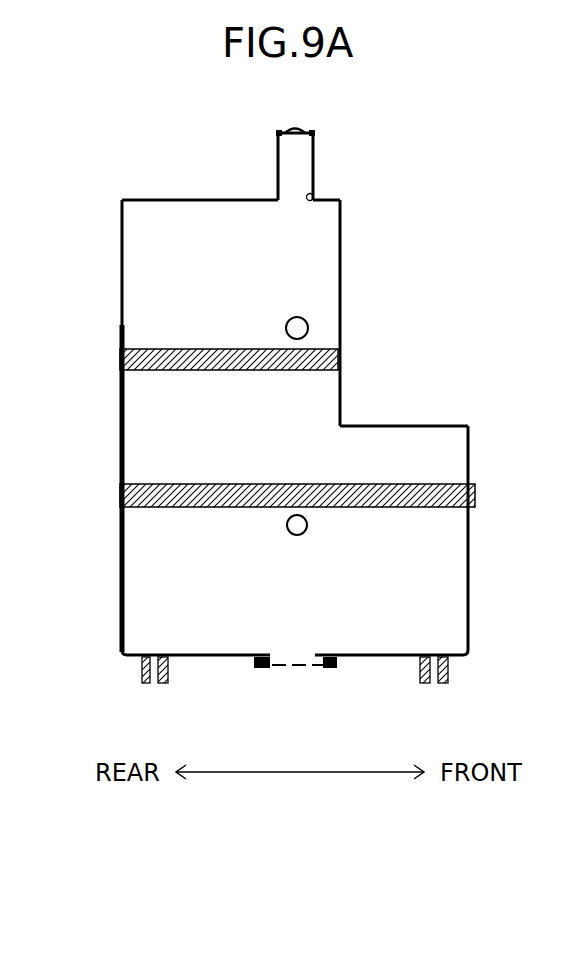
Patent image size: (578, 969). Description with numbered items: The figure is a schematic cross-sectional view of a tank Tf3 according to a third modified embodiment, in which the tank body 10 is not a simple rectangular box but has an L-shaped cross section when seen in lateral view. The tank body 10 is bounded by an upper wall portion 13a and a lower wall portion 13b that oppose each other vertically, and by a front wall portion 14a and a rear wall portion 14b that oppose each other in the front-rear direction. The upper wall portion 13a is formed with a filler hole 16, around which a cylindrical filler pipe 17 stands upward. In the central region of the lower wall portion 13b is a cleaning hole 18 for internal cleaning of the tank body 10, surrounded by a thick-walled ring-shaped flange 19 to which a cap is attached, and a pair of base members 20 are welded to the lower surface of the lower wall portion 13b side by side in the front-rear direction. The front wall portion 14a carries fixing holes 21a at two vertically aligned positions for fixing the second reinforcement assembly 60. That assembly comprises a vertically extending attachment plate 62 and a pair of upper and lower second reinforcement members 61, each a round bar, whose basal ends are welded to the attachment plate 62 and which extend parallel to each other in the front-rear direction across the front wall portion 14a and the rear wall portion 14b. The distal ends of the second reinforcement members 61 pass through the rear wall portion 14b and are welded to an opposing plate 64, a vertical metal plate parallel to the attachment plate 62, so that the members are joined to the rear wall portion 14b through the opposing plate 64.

The tank body 10 is at (166, 176).
The upper wall portion 13a is at (241, 198).
The lower wall portion 13b is at (372, 657).
The front wall portion 14a is at (342, 240).
The rear wall portion 14b is at (120, 233).
The filler hole 16 is at (313, 195).
The filler pipe 17 is at (314, 143).
The cleaning hole 18 is at (282, 655).
The ring-shaped flange 19 is at (262, 670).
The base members 20 is at (141, 673).
The fixing holes 21a is at (286, 330).
The second reinforcement assembly 60 is at (474, 461).
The second reinforcement members 61 is at (298, 318).
The attachment plate 62 is at (470, 440).
The opposing plate 64 is at (120, 412).
The tank Tf3 is at (426, 160).